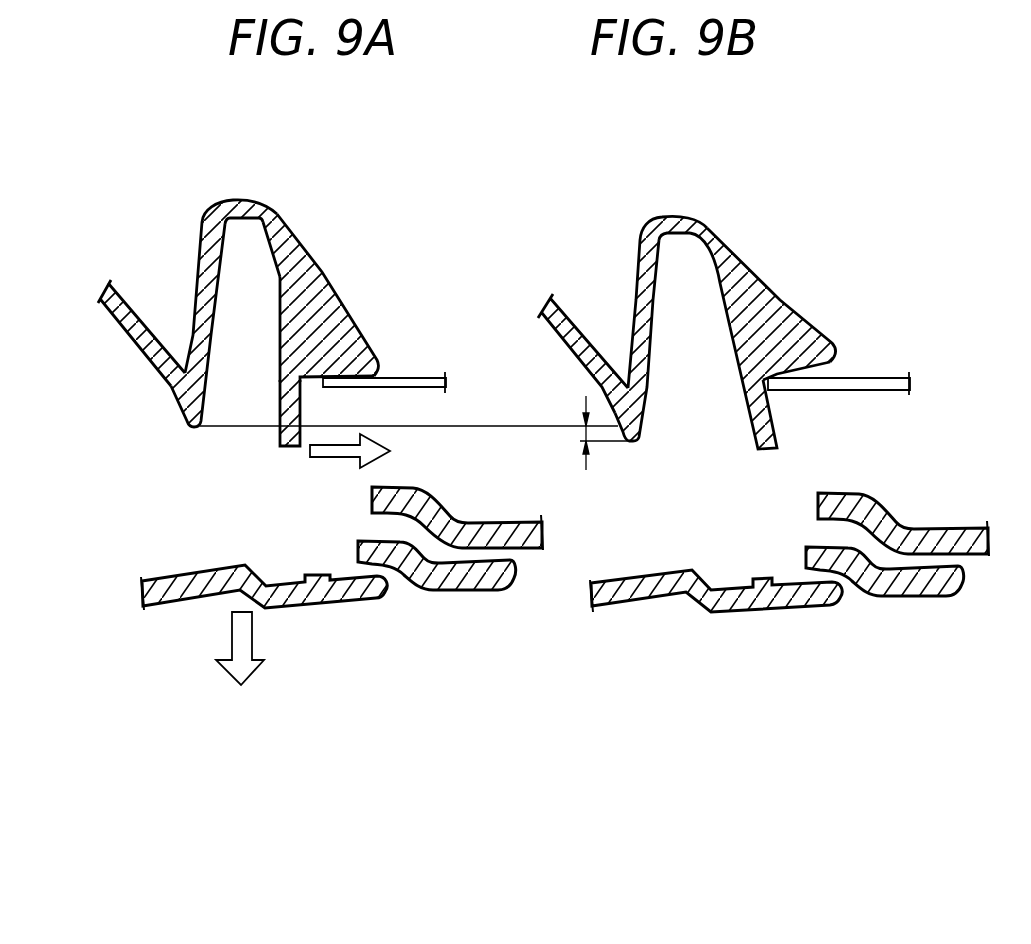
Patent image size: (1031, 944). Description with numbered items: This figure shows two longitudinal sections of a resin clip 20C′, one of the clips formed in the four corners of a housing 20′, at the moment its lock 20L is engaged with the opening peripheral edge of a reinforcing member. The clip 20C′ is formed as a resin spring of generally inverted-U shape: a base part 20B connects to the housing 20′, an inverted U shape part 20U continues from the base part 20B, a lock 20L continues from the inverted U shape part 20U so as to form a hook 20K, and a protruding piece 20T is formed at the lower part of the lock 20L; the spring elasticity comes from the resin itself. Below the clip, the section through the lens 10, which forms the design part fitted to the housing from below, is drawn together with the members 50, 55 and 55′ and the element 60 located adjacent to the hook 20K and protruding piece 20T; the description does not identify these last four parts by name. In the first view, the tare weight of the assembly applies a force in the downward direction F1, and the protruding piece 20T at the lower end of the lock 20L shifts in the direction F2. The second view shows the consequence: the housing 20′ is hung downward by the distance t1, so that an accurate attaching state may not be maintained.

In FIG. 9A, the lens 10 is at (175, 600).
In FIG. 9B, the lens 10 is at (622, 606).
In FIG. 9A, the housing 20′ is at (133, 342).
In FIG. 9B, the housing 20′ is at (570, 337).
In FIG. 9A, the base part 20B is at (200, 285).
In FIG. 9B, the base part 20B is at (636, 297).
In FIG. 9A, the resin clip 20C′ is at (323, 264).
In FIG. 9B, the resin clip 20C′ is at (760, 263).
In FIG. 9A, the hook 20K is at (307, 381).
In FIG. 9B, the hook 20K is at (813, 367).
In FIG. 9A, the lock 20L is at (333, 320).
In FIG. 9B, the lock 20L is at (770, 303).
In FIG. 9A, the protruding piece 20T is at (285, 412).
In FIG. 9B, the protruding piece 20T is at (757, 428).
In FIG. 9A, the inverted U shape part 20U is at (242, 208).
In FIG. 9B, the inverted U shape part 20U is at (680, 216).
In FIG. 9A, the second member 50 is at (523, 553).
In FIG. 9B, the bracket 55 is at (970, 562).
In FIG. 9A, the bracket engaging portion 55′ is at (425, 572).
In FIG. 9B, the bracket engaging portion 55′ is at (873, 580).
In FIG. 9A, the rod 60 is at (413, 377).
In FIG. 9B, the rod 60 is at (850, 392).
In FIG. 9A, the downward direction F1 is at (251, 648).
In FIG. 9A, the direction of movement of protruding piece F2 is at (368, 451).
In FIG. 9B, the hanging distance t1 is at (583, 441).